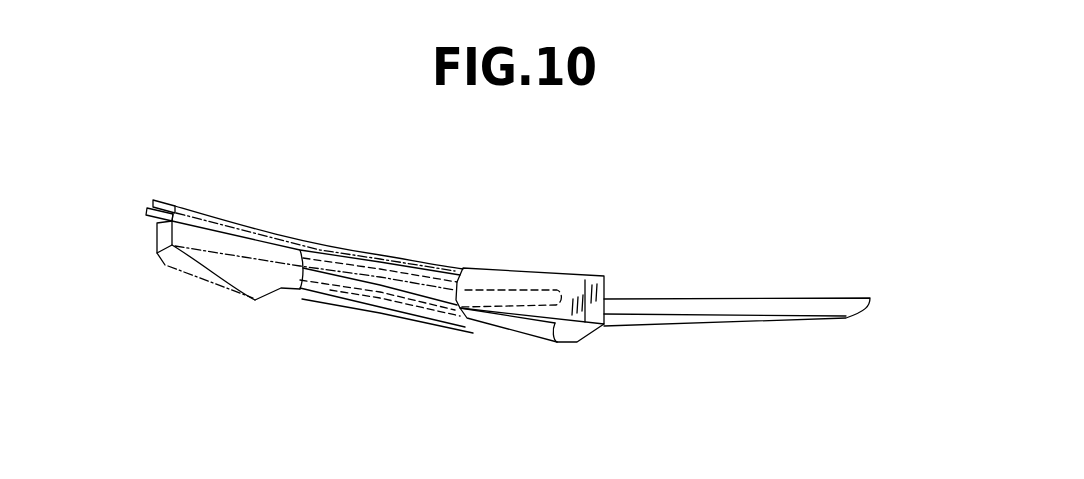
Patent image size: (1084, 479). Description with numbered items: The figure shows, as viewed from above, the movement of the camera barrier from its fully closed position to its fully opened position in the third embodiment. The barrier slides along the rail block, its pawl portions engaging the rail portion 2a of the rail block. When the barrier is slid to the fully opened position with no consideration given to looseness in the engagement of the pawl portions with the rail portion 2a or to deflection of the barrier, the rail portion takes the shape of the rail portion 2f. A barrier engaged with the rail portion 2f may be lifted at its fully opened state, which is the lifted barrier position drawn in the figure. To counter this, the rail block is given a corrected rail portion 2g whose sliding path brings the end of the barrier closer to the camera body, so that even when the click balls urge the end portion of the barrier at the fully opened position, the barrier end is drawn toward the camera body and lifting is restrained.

The rail portion 2a is at (448, 266).
The rail portion 2f is at (166, 197).
The corrected rail portion 2g is at (153, 223).